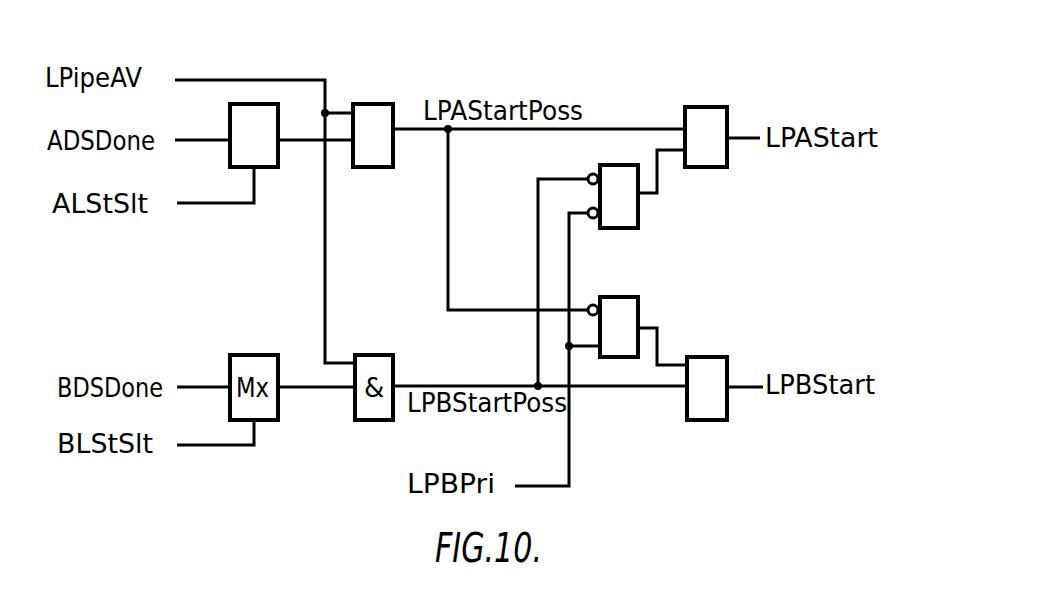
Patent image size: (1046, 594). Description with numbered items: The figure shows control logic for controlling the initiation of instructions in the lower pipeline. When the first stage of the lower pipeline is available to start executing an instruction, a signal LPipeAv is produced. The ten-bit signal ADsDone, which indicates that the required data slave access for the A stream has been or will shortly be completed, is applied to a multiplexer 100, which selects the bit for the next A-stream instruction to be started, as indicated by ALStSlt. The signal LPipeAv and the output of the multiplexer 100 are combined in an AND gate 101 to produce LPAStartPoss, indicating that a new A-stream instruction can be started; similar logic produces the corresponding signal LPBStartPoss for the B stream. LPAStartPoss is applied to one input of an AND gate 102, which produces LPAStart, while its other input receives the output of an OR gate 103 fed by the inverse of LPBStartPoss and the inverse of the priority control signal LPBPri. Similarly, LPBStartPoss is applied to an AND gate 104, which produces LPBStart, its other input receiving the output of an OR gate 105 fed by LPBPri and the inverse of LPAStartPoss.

The multiplexer 100 is at (262, 167).
The AND gate 101 is at (373, 167).
The AND gate 102 is at (716, 107).
The OR gate 103 is at (620, 228).
The AND gate 104 is at (707, 420).
The OR gate 105 is at (622, 297).